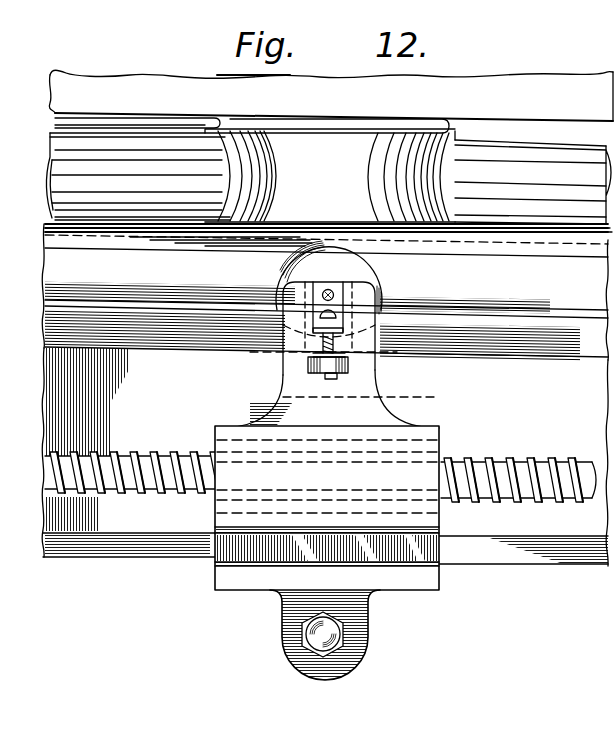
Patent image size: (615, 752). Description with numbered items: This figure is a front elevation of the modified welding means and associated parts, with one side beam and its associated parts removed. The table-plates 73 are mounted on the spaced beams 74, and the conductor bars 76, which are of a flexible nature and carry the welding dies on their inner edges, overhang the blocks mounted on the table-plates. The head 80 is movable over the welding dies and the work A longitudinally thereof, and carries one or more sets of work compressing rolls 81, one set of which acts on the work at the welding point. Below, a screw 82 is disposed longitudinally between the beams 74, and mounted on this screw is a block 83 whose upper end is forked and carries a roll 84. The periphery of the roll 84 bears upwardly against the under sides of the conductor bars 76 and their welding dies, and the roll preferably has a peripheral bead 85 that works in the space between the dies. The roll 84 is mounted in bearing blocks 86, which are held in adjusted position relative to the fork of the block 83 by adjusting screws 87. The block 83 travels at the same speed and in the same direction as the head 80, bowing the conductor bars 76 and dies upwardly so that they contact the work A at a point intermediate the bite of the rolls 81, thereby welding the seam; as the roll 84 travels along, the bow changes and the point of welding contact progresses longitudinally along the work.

The head 80 is at (331, 101).
The work A is at (138, 176).
The work compressing rolls 81 is at (330, 175).
The conductor bars 76 is at (56, 237).
The table-plates 73 is at (44, 292).
The spaced beams 74 is at (325, 457).
The peripheral bead 85 is at (283, 266).
The roll 84 is at (362, 275).
The bearing blocks 86 is at (335, 300).
The adjusting screws 87 is at (312, 353).
The block 83 is at (408, 438).
The screw 82 is at (171, 487).